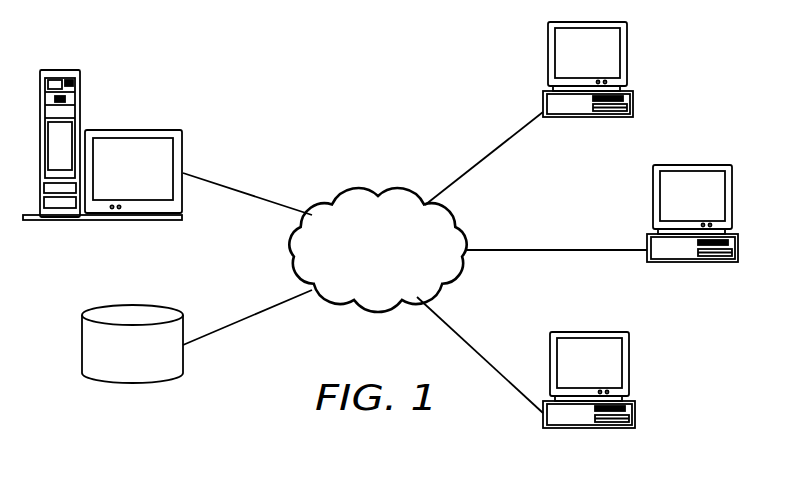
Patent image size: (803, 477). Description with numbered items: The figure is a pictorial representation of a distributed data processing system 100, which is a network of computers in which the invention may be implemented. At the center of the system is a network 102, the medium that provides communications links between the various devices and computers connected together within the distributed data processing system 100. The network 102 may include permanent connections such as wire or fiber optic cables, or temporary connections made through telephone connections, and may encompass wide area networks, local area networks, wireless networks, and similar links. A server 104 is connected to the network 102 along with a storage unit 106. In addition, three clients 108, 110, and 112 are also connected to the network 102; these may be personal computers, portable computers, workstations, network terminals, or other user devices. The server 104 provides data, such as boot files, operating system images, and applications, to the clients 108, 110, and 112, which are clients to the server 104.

The distributed data processing system 100 is at (261, 58).
The network 102 is at (397, 274).
The server 104 is at (80, 91).
The storage unit 106 is at (82, 346).
The client 108 is at (628, 61).
The client 110 is at (733, 201).
The client 112 is at (629, 368).